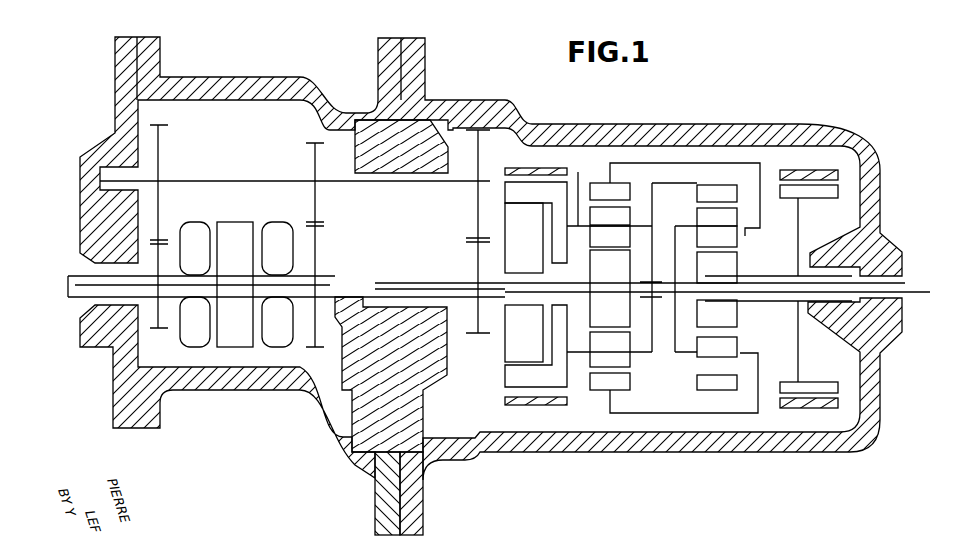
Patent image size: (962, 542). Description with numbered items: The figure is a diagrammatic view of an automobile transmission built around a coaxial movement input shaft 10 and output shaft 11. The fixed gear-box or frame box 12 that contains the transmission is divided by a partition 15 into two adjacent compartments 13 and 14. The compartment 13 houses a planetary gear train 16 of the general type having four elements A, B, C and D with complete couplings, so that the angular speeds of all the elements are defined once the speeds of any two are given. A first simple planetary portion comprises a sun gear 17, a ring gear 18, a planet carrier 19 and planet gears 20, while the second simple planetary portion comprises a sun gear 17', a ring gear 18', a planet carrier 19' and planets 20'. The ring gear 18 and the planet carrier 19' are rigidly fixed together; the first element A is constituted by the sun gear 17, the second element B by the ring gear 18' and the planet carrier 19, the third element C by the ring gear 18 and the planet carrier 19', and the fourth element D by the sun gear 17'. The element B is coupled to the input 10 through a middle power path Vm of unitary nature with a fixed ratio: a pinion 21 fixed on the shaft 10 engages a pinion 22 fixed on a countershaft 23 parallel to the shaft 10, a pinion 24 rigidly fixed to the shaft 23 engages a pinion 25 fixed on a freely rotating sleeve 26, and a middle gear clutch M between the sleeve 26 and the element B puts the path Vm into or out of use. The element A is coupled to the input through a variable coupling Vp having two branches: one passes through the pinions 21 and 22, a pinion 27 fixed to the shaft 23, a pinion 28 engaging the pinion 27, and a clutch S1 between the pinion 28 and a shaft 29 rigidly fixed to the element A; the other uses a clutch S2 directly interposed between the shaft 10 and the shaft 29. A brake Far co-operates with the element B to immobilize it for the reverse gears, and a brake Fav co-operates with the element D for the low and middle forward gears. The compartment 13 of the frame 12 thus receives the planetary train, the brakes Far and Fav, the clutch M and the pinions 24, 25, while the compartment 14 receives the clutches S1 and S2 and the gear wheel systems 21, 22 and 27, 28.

The movement input shaft 10 is at (68, 283).
The output shaft 11 is at (903, 291).
The fixed gear-box or frame box 12 is at (423, 505).
The compartment 13 is at (662, 391).
The compartment 14 is at (145, 137).
The partition 15 is at (362, 405).
The planetary gear train 16 is at (666, 415).
The sun gear 17 is at (610, 288).
The sun gear 17' is at (768, 262).
The ring gear 18 is at (675, 245).
The ring gear 18' is at (725, 245).
The planet carrier 19 is at (584, 186).
The planet carrier 19' is at (773, 237).
The planet gears 20 is at (665, 389).
The planets 20' is at (660, 389).
The pinion 21 is at (163, 331).
The pinion 22 is at (167, 132).
The countershaft 23 is at (224, 181).
The pinion 24 is at (478, 165).
The pinion 25 is at (468, 246).
The sleeve 26 is at (502, 267).
The pinion 27 is at (312, 150).
The pinion 28 is at (310, 224).
The shaft 29 is at (397, 298).
The first element A is at (623, 321).
The second element B is at (657, 208).
The third element C is at (758, 372).
The fourth element D is at (740, 316).
The middle gear clutch M is at (519, 244).
The clutch S1 is at (264, 350).
The clutch S2 is at (219, 350).
The middle power path Vm is at (485, 181).
The first element coupling Vp is at (325, 295).
The brake Far is at (551, 167).
The brake Fav is at (820, 170).